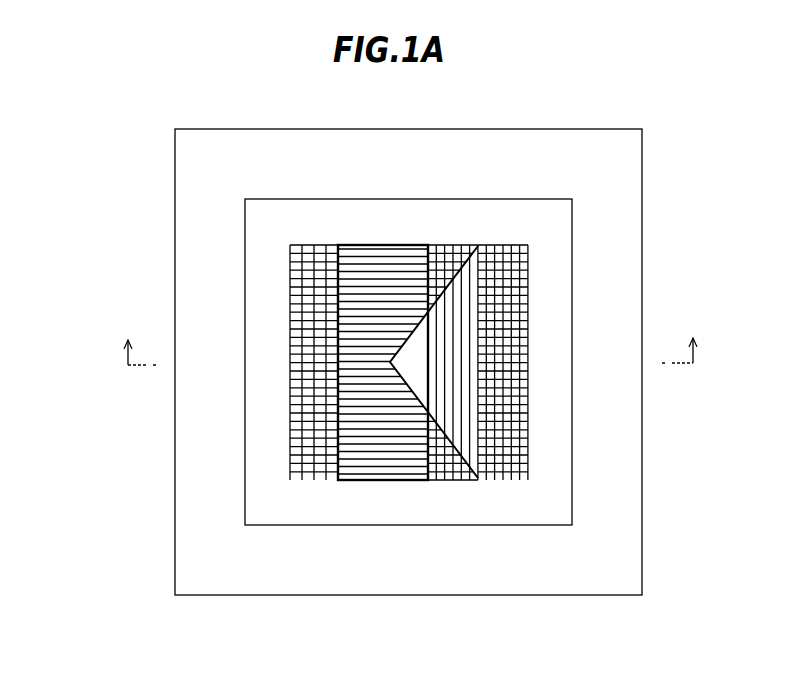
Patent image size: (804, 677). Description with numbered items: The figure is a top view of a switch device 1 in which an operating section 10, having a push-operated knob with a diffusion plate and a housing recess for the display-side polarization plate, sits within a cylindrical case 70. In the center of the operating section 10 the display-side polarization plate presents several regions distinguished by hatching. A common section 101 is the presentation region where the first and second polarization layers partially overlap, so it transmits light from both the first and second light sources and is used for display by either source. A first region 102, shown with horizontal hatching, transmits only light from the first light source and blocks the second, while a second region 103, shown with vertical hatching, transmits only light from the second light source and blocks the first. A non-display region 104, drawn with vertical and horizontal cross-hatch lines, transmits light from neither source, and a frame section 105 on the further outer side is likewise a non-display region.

The switch device 1 is at (135, 108).
The operating section 10 is at (477, 347).
The case 70 is at (642, 300).
The common section 101 is at (413, 353).
The first region 102 is at (350, 303).
The second region 103 is at (467, 293).
The non-display region 104 is at (448, 247).
The frame section 105 is at (550, 470).